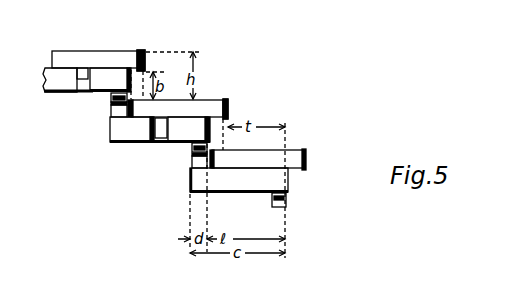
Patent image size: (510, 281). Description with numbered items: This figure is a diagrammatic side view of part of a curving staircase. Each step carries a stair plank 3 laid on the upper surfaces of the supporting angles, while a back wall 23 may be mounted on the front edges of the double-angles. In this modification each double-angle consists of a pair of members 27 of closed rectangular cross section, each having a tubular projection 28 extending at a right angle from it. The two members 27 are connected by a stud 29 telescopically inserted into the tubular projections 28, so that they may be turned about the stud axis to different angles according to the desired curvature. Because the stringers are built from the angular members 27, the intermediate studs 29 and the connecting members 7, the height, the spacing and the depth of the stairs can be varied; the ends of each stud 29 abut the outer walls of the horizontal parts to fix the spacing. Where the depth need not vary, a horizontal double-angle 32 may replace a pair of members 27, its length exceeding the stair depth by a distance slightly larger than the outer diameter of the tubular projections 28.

The stair plank 3 is at (73, 58).
The connecting member 7 is at (76, 82).
The back wall 23 is at (139, 52).
The member of closed rectangular cross section 27 is at (103, 77).
The tubular projection 28 is at (111, 97).
The stud 29 is at (112, 109).
The horizontal double-angle 32 is at (236, 197).